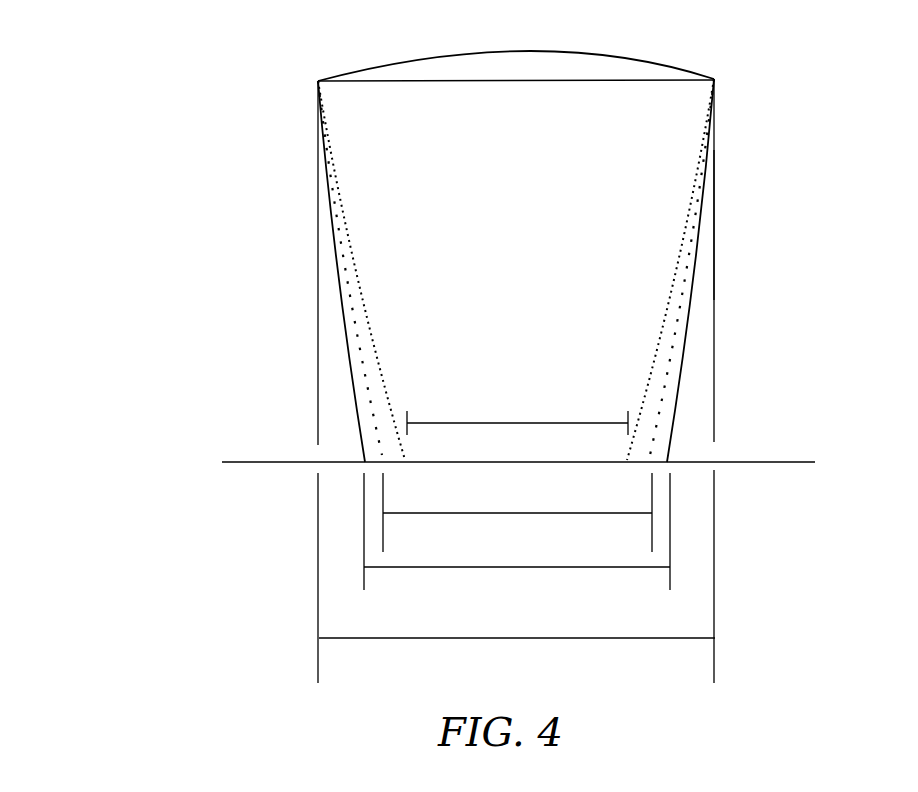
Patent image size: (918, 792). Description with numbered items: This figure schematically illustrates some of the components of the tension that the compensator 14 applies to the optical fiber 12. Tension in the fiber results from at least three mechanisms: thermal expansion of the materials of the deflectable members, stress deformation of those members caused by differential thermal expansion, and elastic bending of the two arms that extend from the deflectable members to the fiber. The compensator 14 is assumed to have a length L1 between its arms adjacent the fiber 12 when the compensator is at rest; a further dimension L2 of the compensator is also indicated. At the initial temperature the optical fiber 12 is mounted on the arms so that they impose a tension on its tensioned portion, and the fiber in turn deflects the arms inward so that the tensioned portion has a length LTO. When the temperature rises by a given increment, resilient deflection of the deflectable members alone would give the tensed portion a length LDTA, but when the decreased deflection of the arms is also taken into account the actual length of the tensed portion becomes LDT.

The optical fiber 12 is at (275, 462).
The compensator 14 is at (754, 130).
The length L1 is at (535, 81).
The side length L2 is at (714, 230).
The length L-delta-tA LDTA is at (587, 422).
The length L-delta-t LDT is at (555, 513).
The length Lt0 LTO is at (556, 568).